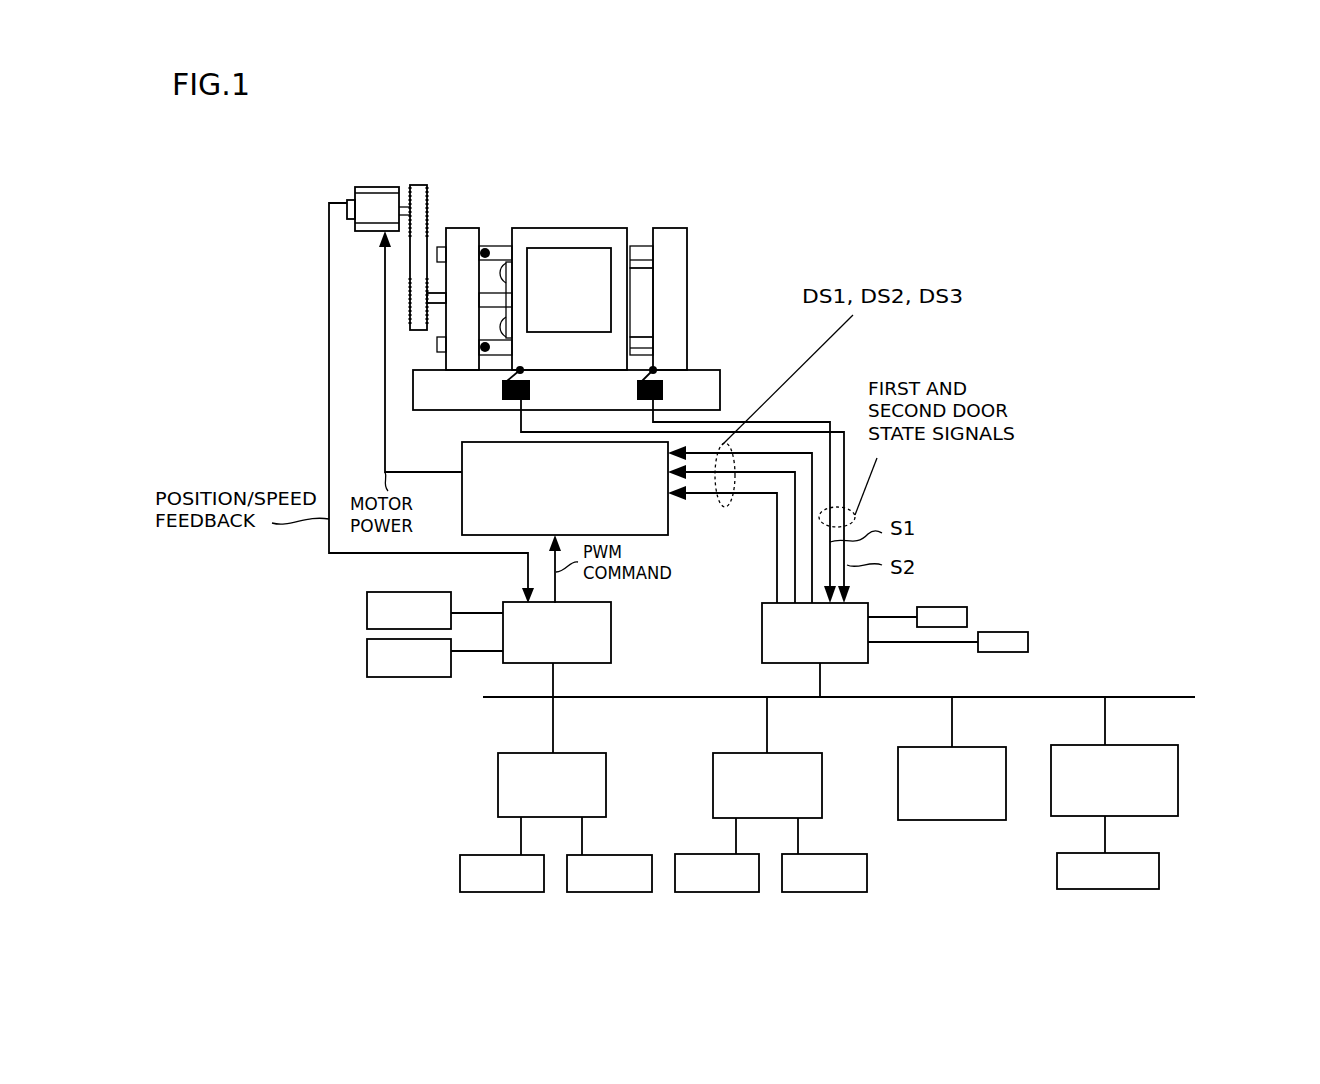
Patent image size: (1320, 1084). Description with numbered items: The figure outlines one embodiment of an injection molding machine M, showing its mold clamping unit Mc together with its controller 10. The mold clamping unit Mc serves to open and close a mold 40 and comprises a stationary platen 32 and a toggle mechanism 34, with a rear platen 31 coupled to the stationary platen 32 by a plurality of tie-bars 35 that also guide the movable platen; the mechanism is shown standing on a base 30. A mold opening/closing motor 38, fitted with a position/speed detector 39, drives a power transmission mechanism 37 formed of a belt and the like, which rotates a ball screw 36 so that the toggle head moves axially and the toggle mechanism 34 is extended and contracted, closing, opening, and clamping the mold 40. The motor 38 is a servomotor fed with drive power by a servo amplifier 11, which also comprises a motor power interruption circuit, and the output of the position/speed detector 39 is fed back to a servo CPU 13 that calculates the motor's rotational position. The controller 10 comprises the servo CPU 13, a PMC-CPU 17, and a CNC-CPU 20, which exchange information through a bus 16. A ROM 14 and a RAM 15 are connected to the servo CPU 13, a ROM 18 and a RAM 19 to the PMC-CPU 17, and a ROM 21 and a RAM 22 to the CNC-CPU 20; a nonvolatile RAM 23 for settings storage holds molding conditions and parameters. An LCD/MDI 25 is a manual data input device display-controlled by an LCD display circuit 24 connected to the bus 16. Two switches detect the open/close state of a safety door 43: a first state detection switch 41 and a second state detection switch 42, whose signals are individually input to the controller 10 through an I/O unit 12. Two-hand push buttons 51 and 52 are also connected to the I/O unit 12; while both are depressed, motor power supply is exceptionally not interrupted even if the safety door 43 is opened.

The controller 10 is at (1092, 642).
The servo amplifier 11 is at (668, 532).
The I/O unit 12 is at (762, 633).
The servo CPU 13 is at (611, 630).
The ROM 14 is at (367, 607).
The RAM 15 is at (367, 655).
The bus 16 is at (1125, 697).
The PMC-CPU 17 is at (606, 770).
The ROM 18 is at (500, 893).
The RAM 19 is at (607, 893).
The CNC-CPU 20 is at (822, 773).
The ROM 21 is at (716, 893).
The RAM 22 is at (820, 893).
The RAM for settings storage 23 is at (946, 820).
The LCD display circuit 24 is at (1178, 782).
The LCD/MDI 25 is at (1159, 867).
The base 30 is at (720, 370).
The rear platen 31 is at (458, 228).
The stationary platen 32 is at (672, 228).
The toggle mechanism 34 is at (500, 246).
The tie-bars 35 is at (505, 262).
The ball screw 36 is at (440, 308).
The power transmission mechanism 37 is at (418, 185).
The mold opening/closing motor 38 is at (366, 187).
The position/speed detector 39 is at (347, 205).
The mold 40 is at (637, 280).
The first state detection switch 41 is at (532, 392).
The second state detection switch 42 is at (665, 392).
The safety door 43 is at (578, 228).
The two-hand push button 51 is at (967, 615).
The two-hand push button 52 is at (1028, 640).
The injection molding machine M is at (752, 229).
The mold clamping unit Mc is at (604, 145).